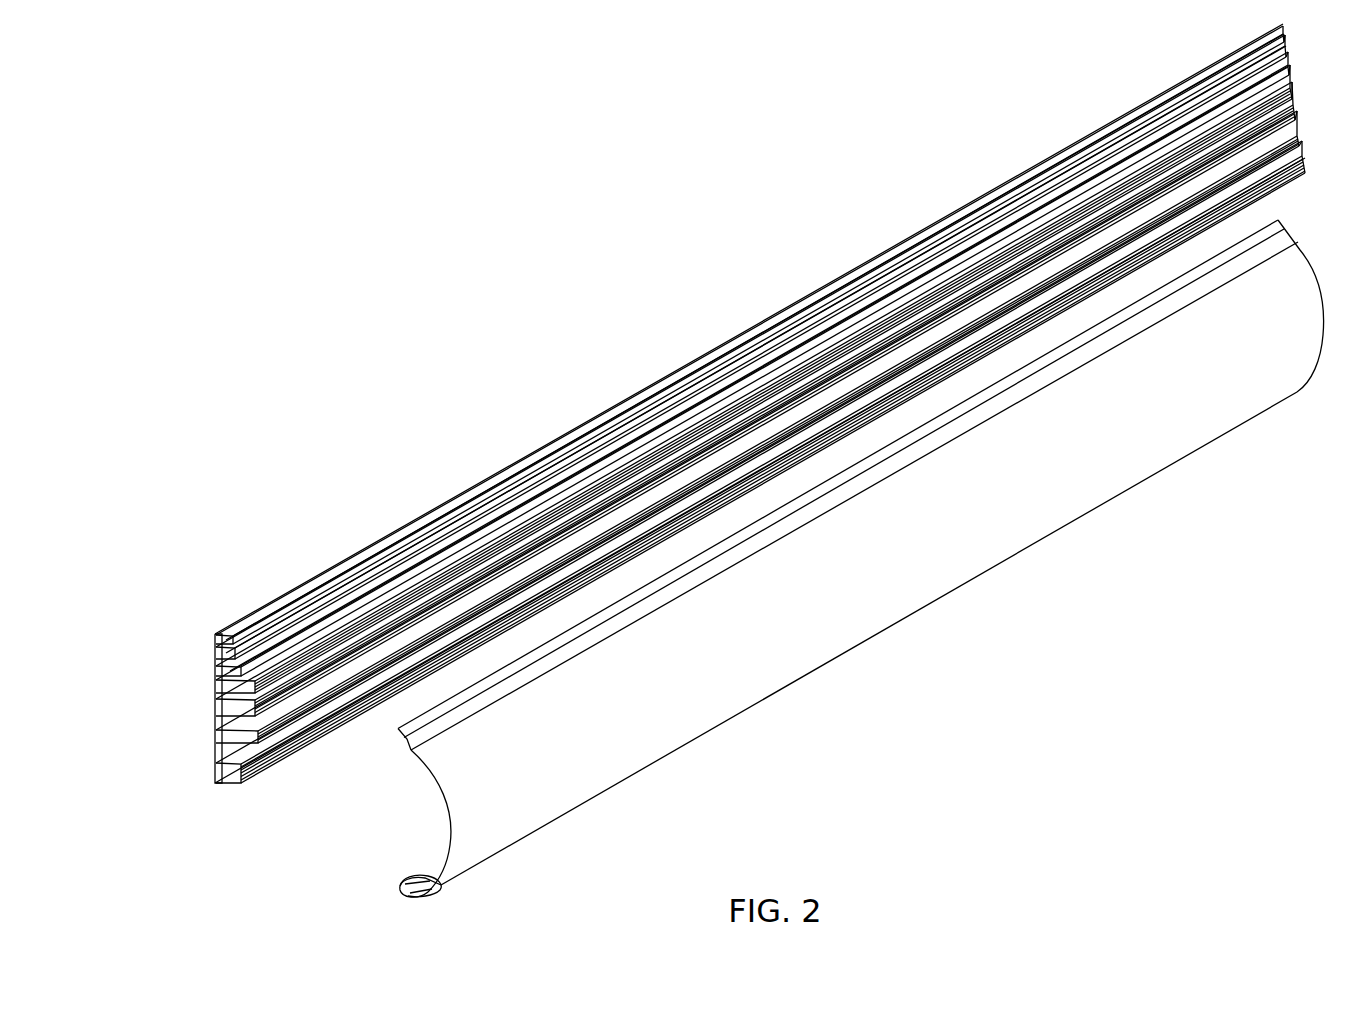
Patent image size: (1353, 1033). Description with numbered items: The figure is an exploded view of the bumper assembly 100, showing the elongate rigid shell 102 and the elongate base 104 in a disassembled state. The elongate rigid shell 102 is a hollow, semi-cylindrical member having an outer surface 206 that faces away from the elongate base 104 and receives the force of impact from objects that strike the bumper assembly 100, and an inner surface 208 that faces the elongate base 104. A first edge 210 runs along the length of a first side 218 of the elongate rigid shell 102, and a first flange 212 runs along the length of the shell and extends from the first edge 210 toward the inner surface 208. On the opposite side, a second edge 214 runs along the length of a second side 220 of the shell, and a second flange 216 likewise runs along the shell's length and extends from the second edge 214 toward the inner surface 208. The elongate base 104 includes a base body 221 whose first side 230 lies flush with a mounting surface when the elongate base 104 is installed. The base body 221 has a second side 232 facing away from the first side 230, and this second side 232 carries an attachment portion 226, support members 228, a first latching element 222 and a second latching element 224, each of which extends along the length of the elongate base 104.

The bumper assembly 100 is at (1104, 722).
The elongate rigid shell 102 is at (935, 590).
The elongate base 104 is at (320, 572).
The outer surface 206 is at (538, 800).
The inner surface 208 is at (448, 828).
The first edge 210 is at (400, 740).
The first flange 212 is at (406, 745).
The second edge 214 is at (408, 890).
The second flange 216 is at (405, 886).
The first side 218 is at (380, 740).
The second side 220 is at (445, 900).
The base body 221 is at (218, 665).
The first latching element 222 is at (218, 640).
The second latching element 224 is at (240, 790).
The attachment portion 226 is at (230, 716).
The support members 228 is at (240, 780).
The first side 230 is at (222, 677).
The second side 232 is at (224, 693).